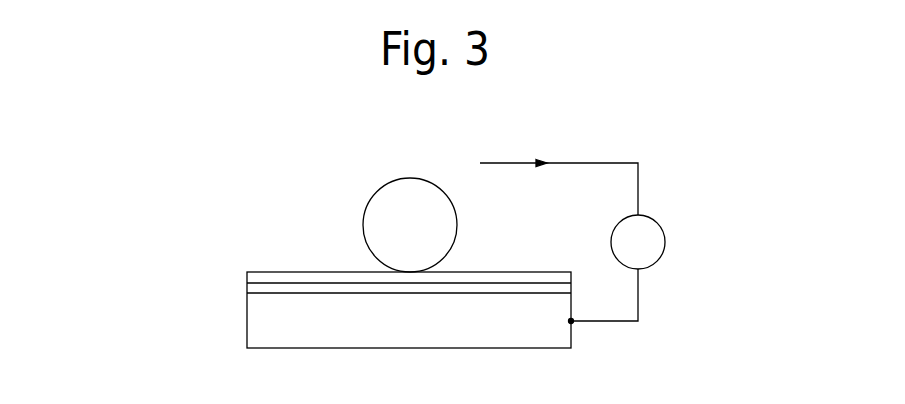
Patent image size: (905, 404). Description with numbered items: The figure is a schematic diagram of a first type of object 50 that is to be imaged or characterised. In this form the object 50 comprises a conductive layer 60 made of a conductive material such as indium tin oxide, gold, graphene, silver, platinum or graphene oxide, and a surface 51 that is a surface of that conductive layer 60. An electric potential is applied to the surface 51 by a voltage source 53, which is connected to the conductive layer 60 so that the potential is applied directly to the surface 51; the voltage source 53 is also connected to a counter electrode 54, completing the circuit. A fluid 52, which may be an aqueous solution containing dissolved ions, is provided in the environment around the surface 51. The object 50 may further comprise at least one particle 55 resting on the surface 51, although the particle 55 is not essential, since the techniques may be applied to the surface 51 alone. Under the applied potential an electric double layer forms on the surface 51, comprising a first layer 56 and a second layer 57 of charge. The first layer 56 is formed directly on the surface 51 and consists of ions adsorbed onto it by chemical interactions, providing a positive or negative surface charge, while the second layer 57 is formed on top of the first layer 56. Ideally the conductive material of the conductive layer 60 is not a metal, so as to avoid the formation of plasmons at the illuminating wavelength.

The object 50 is at (355, 307).
The surface 51 is at (300, 292).
The fluid 52 is at (372, 199).
The voltage source 53 is at (657, 240).
The counter electrode 54 is at (517, 158).
The particle 55 is at (403, 192).
The first layer 56 is at (270, 290).
The second layer 57 is at (247, 278).
The conductive layer 60 is at (377, 336).